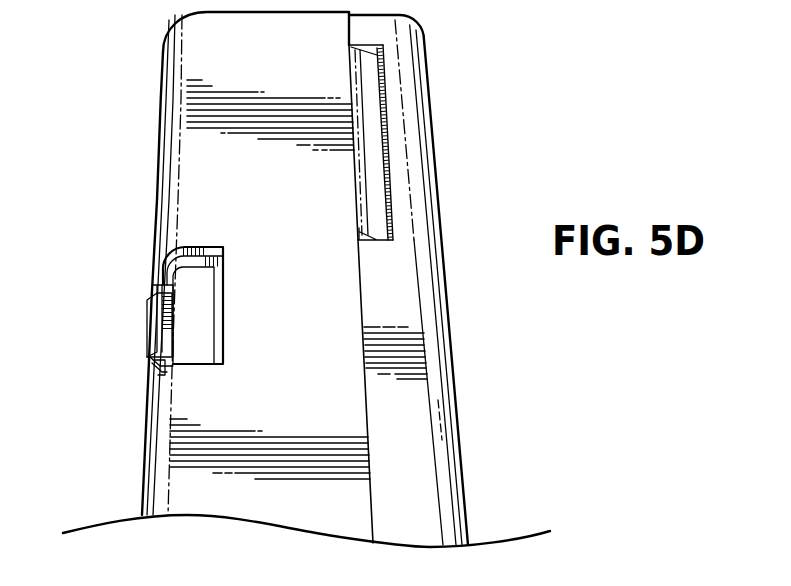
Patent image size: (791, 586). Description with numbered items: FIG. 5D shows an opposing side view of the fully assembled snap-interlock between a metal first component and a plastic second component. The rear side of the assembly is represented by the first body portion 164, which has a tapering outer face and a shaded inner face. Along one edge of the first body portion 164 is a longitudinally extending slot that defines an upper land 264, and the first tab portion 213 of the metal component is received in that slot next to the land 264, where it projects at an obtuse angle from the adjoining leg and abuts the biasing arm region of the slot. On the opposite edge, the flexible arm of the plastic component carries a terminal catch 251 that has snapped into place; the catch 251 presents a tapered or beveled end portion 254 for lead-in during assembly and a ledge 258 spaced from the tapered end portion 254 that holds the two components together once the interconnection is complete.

The first body portion 164 is at (287, 200).
The first tab portion 213 is at (378, 195).
The upper land 264 is at (383, 142).
The terminal catch 251 is at (130, 339).
The tapered end portion 254 is at (152, 312).
The ledge 258 is at (152, 373).